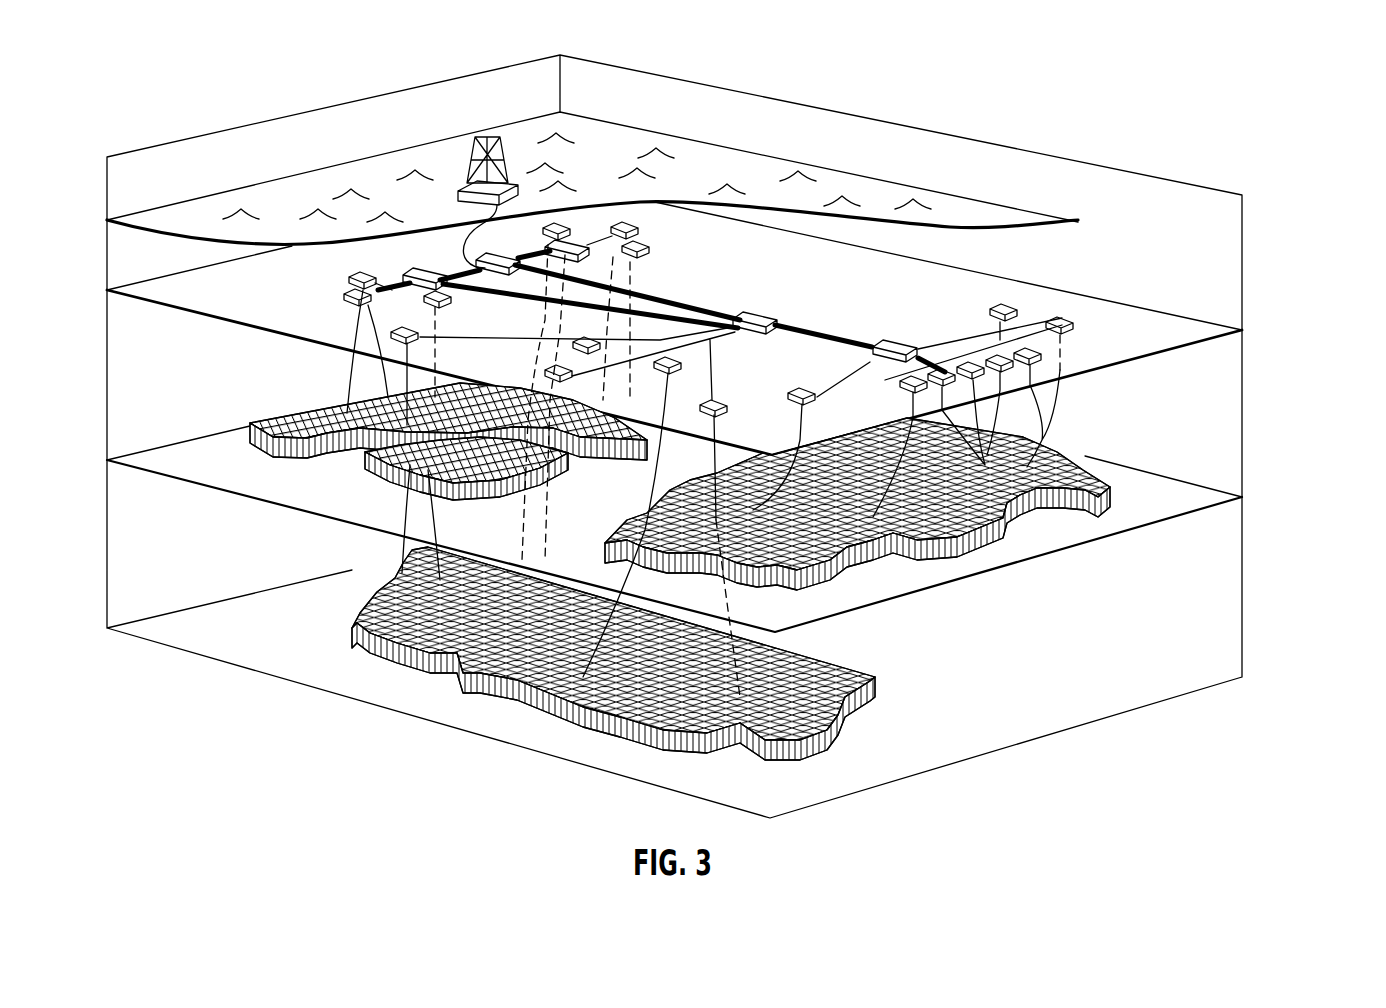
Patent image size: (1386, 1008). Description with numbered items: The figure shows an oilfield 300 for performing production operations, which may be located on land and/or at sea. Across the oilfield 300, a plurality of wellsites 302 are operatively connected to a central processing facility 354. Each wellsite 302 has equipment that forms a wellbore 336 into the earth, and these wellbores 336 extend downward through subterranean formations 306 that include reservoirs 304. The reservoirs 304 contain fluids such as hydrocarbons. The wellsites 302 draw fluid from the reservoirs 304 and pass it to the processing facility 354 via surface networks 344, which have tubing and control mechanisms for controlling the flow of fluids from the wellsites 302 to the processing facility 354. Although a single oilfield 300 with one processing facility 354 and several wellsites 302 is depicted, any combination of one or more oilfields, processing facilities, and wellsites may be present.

The oilfield 300 is at (96, 102).
The wellsites 302 is at (806, 384).
The reservoirs 304 is at (950, 578).
The subterranean formations 306 is at (1273, 682).
The wellbore 336 is at (672, 522).
The surface networks 344 is at (398, 304).
The central processing facility 354 is at (466, 150).